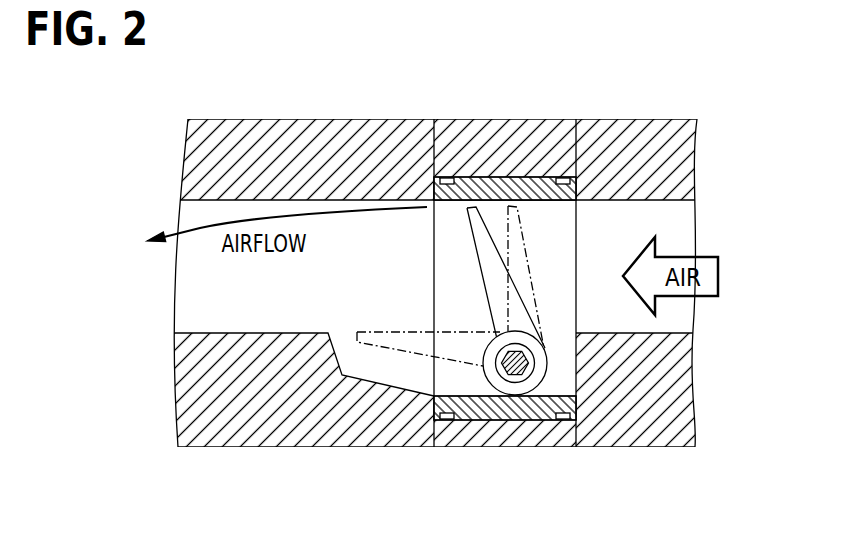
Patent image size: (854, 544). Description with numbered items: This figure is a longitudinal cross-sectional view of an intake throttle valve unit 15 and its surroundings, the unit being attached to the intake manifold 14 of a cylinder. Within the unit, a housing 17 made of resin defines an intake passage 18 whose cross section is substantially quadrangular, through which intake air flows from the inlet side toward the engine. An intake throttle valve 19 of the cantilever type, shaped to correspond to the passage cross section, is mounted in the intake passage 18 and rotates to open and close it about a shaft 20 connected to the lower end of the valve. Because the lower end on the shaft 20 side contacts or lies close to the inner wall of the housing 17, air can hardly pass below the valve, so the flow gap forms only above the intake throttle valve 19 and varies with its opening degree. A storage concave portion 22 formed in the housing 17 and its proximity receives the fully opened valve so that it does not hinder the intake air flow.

The intake manifold 14 is at (642, 120).
The intake throttle valve unit 15 is at (542, 172).
The housing 17 is at (507, 177).
The intake passage 18 is at (555, 238).
The intake throttle valve 19 is at (479, 257).
The shaft 20 is at (517, 362).
The storage concave portion 22 is at (418, 377).